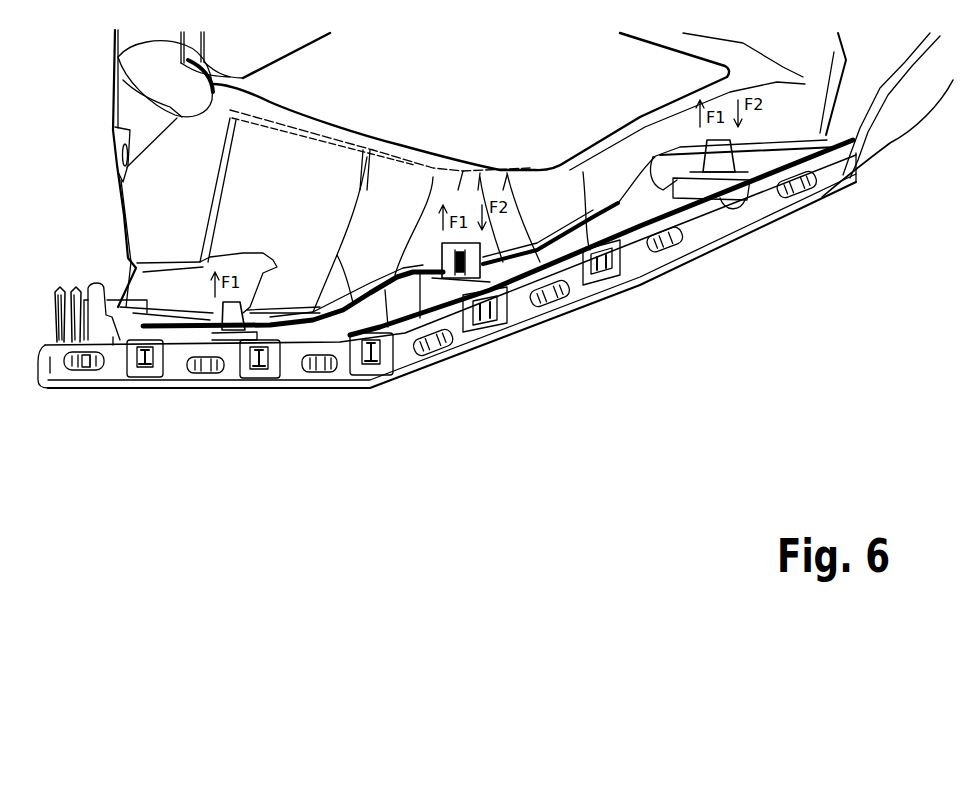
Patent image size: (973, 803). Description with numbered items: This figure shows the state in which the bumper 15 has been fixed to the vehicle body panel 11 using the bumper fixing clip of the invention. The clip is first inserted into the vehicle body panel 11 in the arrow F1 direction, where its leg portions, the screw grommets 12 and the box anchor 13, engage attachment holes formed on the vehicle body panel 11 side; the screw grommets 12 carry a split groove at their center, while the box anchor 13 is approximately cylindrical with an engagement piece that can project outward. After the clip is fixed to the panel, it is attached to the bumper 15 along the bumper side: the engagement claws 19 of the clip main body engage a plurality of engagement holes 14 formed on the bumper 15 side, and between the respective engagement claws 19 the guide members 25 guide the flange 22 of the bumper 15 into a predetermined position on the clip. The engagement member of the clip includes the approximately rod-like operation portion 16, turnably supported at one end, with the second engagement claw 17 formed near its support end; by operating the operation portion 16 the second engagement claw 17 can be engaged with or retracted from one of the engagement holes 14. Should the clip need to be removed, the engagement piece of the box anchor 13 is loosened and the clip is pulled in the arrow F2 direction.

The vehicle body panel 11 is at (305, 165).
The screw grommet 12 is at (227, 310).
The box anchor 13 is at (450, 240).
The engagement hole 14 is at (90, 368).
The bumper 15 is at (718, 250).
The operation portion 16 is at (63, 287).
The second engagement claw 17 is at (83, 368).
The engagement claw 19 is at (200, 373).
The flange 22 is at (523, 308).
The guide member 25 is at (140, 375).